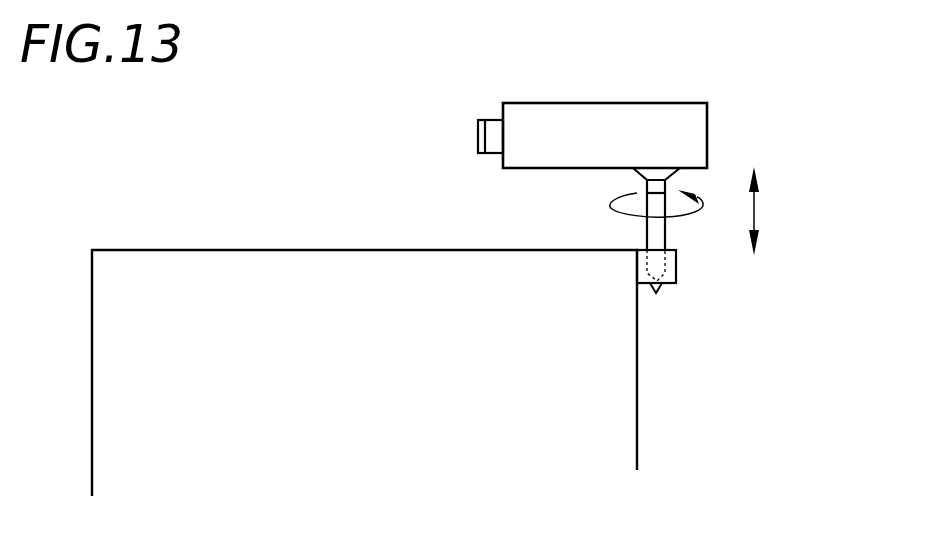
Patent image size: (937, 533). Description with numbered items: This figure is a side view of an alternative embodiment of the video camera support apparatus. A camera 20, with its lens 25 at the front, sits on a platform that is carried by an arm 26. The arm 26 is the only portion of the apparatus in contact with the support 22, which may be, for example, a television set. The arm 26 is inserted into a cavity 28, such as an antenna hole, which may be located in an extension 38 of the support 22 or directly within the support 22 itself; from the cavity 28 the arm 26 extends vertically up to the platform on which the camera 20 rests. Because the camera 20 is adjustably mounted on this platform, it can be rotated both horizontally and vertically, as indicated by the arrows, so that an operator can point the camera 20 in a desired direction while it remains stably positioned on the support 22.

The camera 20 is at (708, 108).
The support 22 is at (180, 250).
The lens 25 is at (478, 135).
The arm 26 is at (653, 231).
The cavity 28 is at (667, 264).
The extension 38 is at (663, 285).